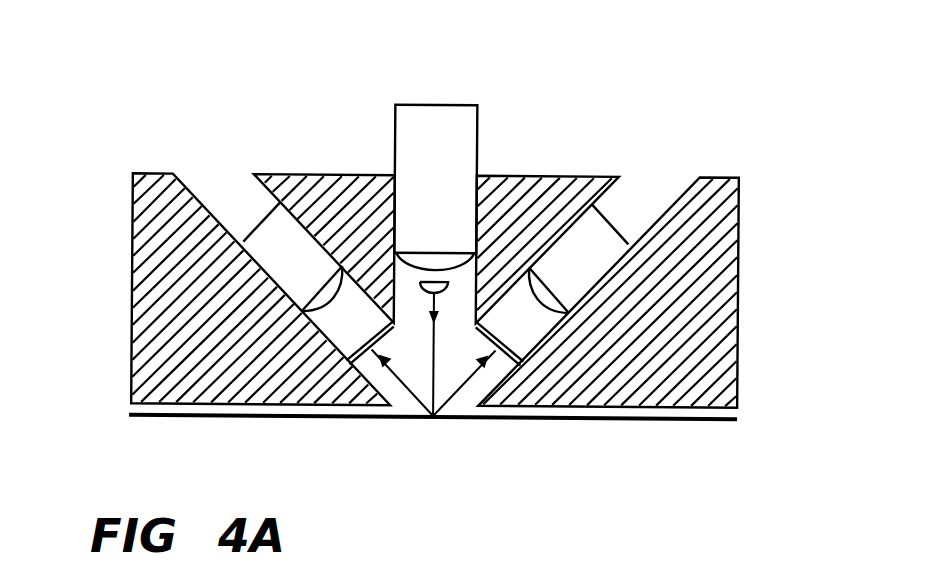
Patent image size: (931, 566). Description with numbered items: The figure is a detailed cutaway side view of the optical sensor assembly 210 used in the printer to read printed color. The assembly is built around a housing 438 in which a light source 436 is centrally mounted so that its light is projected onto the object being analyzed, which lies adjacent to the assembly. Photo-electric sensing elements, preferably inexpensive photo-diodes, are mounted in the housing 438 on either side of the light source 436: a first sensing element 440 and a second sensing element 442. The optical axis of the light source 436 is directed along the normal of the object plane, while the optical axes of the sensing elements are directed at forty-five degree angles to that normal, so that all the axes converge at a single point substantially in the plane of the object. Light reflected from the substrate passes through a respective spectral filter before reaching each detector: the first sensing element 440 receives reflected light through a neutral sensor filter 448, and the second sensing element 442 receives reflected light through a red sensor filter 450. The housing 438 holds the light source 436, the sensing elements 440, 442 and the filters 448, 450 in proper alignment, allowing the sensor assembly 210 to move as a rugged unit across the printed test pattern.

The optical sensor assembly 210 is at (200, 97).
The light source 436 is at (443, 123).
The housing 438 is at (716, 230).
The first sensing element 440 is at (593, 240).
The second sensing element 442 is at (265, 227).
The neutral sensor filter 448 is at (458, 420).
The red sensor filter 450 is at (352, 348).